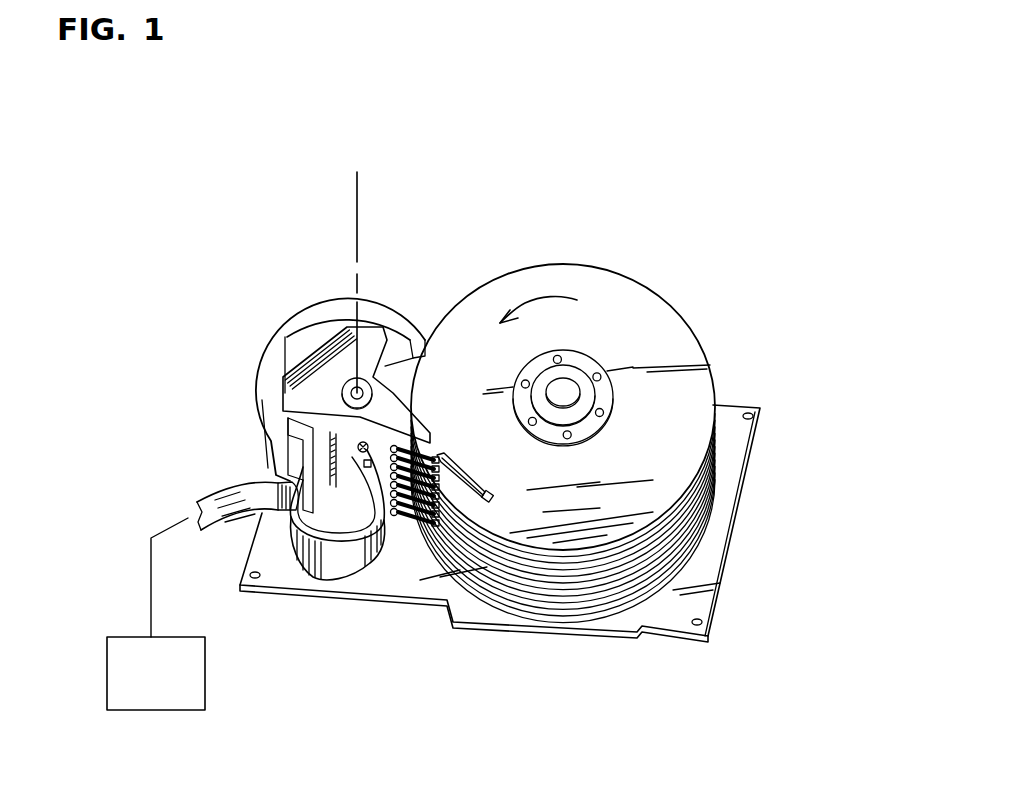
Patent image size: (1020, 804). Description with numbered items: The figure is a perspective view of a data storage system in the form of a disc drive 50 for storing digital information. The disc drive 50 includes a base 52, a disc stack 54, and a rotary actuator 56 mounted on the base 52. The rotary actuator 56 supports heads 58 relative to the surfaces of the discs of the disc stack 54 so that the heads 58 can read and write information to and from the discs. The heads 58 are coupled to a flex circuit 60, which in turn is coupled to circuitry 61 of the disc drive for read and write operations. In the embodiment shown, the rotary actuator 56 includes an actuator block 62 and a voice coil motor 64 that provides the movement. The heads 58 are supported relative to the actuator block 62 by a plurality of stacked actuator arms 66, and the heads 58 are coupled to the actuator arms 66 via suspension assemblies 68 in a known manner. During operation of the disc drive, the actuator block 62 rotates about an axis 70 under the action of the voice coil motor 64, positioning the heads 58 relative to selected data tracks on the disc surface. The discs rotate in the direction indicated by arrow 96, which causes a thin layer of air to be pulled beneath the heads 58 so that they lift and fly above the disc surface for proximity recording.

The disc drive 50 is at (720, 312).
The base 52 is at (742, 437).
The disc stack 54 is at (605, 294).
The rotary actuator 56 is at (390, 394).
The heads 58 is at (490, 496).
The flex circuit 60 is at (352, 555).
The circuitry 61 is at (215, 694).
The actuator block 62 is at (413, 401).
The voice coil motor 64 is at (288, 330).
The actuator arms 66 is at (428, 447).
The suspension assemblies 68 is at (455, 463).
The axis 70 is at (362, 240).
The arrow 96 is at (533, 300).